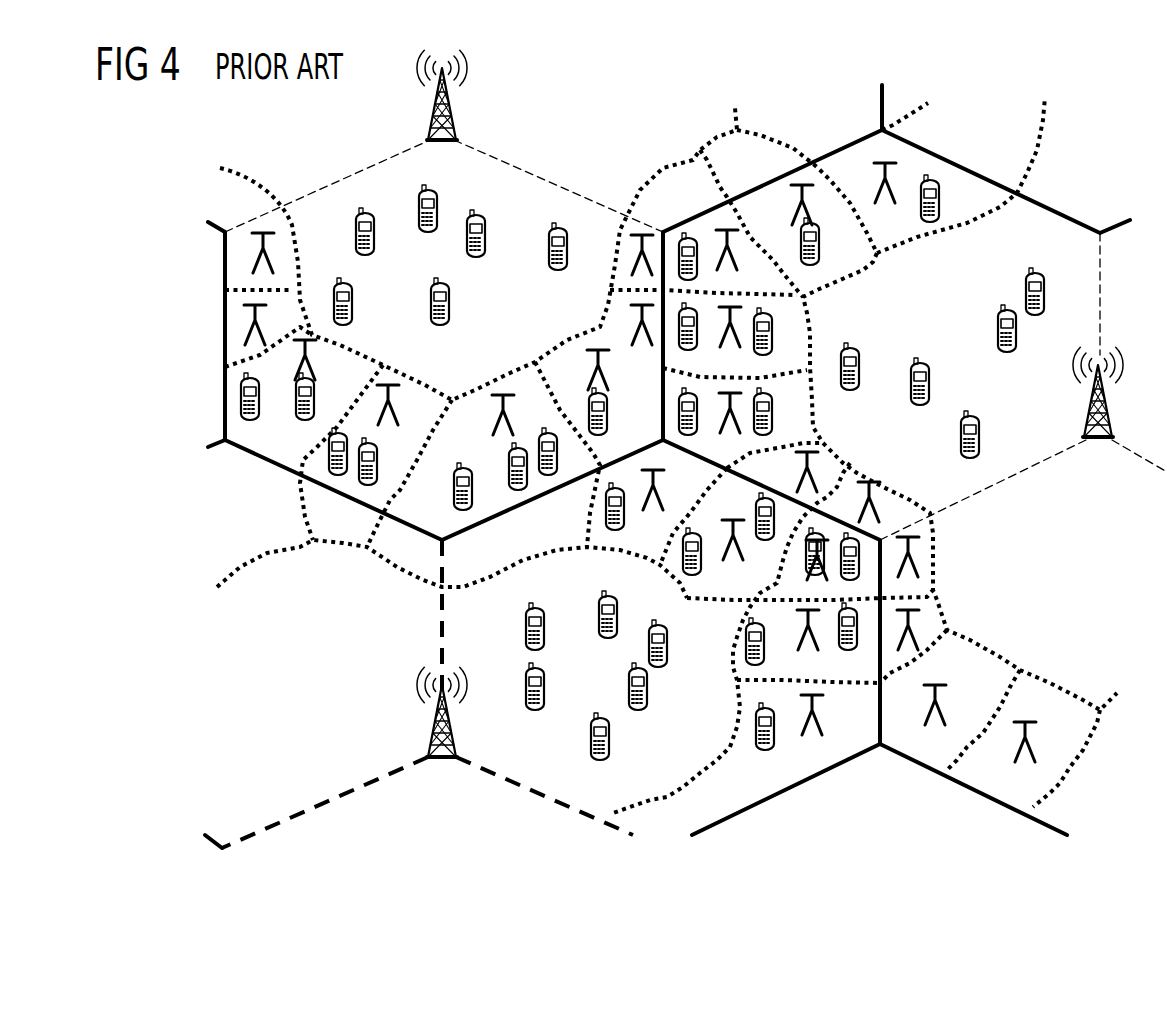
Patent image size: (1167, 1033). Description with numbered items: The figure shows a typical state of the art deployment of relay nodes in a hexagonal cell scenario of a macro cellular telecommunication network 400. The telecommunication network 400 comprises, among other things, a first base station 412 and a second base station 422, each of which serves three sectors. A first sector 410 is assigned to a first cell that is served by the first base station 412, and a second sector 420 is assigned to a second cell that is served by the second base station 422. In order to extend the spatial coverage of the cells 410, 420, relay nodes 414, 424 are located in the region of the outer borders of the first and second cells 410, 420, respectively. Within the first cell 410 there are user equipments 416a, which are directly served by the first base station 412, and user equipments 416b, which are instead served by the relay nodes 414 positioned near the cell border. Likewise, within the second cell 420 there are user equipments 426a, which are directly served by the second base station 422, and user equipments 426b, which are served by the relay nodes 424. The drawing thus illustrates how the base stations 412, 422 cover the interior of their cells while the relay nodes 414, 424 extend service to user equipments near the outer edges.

The macro cellular telecommunication network 400 is at (1085, 120).
The first sector 410 is at (518, 313).
The first base station 412 is at (455, 92).
The relay nodes 414 is at (387, 402).
The user equipments 416a is at (557, 235).
The user equipments 416b is at (377, 457).
The second sector 420 is at (718, 728).
The second base station 422 is at (433, 723).
The relay nodes 424 is at (800, 623).
The user equipments 426a is at (607, 600).
The user equipments 426b is at (687, 545).